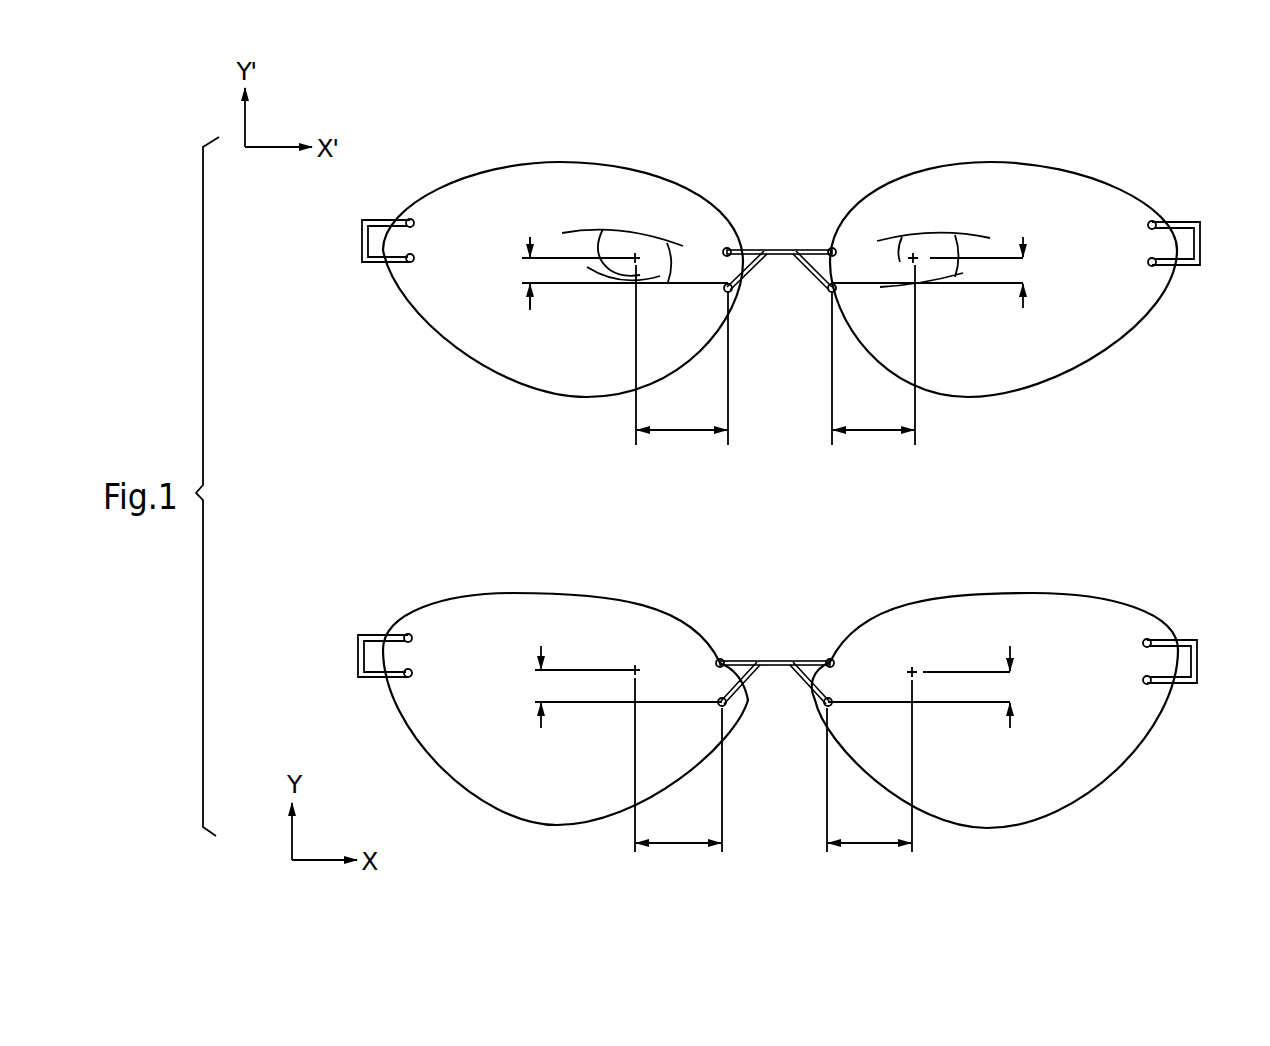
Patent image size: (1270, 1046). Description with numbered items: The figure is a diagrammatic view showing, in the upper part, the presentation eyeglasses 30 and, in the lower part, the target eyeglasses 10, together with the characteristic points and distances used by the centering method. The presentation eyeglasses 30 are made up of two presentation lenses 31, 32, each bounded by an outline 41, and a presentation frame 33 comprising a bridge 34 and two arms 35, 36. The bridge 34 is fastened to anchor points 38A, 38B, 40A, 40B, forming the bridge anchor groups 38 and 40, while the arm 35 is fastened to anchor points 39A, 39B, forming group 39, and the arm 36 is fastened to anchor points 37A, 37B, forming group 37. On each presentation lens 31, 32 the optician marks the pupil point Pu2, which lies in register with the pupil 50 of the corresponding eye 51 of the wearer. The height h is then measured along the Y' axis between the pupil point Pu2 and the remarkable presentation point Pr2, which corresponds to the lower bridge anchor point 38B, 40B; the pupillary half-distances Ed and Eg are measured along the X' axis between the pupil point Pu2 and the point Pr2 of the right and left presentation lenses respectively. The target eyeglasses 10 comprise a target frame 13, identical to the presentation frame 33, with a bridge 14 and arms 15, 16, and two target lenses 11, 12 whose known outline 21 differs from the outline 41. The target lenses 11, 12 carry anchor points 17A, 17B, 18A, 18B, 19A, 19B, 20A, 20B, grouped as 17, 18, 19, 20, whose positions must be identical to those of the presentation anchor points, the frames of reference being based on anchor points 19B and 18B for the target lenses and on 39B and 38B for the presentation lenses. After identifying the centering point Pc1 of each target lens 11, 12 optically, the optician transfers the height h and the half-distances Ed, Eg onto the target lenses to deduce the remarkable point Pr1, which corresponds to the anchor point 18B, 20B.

The target eyeglasses 10 is at (930, 566).
The target lens 11 is at (590, 596).
The target lens 12 is at (1035, 594).
The target frame 13 is at (1197, 668).
The bridge 14 is at (778, 660).
The arm 15 is at (370, 635).
The arm 16 is at (1178, 640).
The anchor points 17 is at (1123, 708).
The anchor point 17A is at (1140, 644).
The anchor point 17B is at (1140, 682).
The anchor points 18 is at (848, 657).
The anchor point 18A is at (836, 663).
The anchor point 18B is at (832, 708).
The anchor points 19 is at (417, 702).
The anchor point 19A is at (415, 638).
The anchor point 19B is at (415, 674).
The anchor points 20 is at (704, 637).
The anchor point 20A is at (716, 663).
The anchor point 20B is at (718, 700).
The outline 21 is at (780, 689).
The presentation eyeglasses 30 is at (934, 128).
The presentation lens 31 is at (604, 162).
The presentation lens 32 is at (1062, 170).
The presentation frame 33 is at (1203, 199).
The bridge 34 is at (778, 250).
The arm 35 is at (370, 220).
The arm 36 is at (1172, 222).
The anchor points 37 is at (1133, 280).
The anchor point 37A is at (1146, 225).
The anchor point 37B is at (1146, 263).
The anchor points 38 is at (837, 284).
The anchor point 38A is at (832, 248).
The anchor point 38B is at (836, 292).
The anchor points 39 is at (428, 285).
The anchor point 39A is at (418, 223).
The anchor point 39B is at (418, 259).
The anchor points 40 is at (706, 247).
The anchor point 40A is at (723, 249).
The anchor point 40B is at (724, 292).
The outline 41 is at (780, 258).
The pupil 50 is at (635, 285).
The eye 51 is at (610, 232).
The pupil point Pu2 is at (774, 265).
The centering point Pc1 is at (775, 659).
The remarkable point Pr1 is at (776, 720).
The remarkable presentation point Pr2 is at (775, 301).
The height h is at (777, 482).
The pupillary half-distance Ed is at (681, 558).
The pupillary half-distance Eg is at (871, 558).